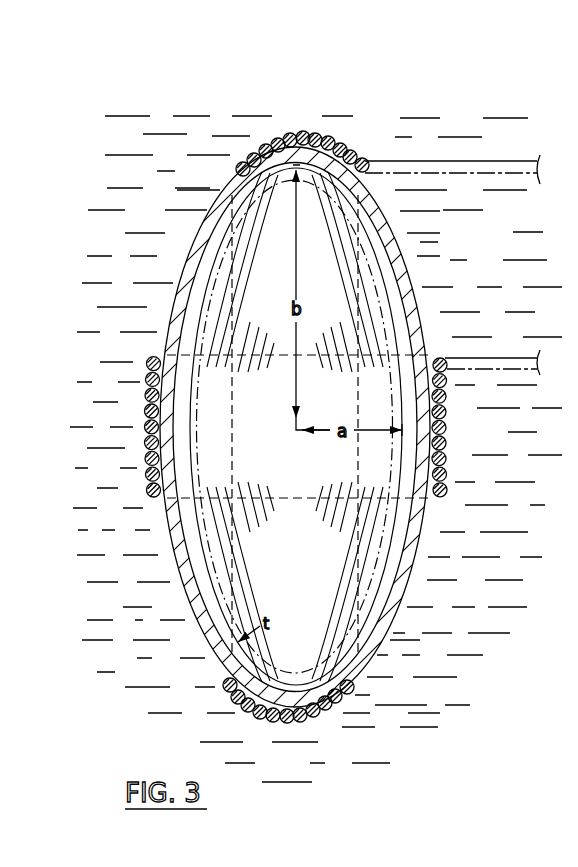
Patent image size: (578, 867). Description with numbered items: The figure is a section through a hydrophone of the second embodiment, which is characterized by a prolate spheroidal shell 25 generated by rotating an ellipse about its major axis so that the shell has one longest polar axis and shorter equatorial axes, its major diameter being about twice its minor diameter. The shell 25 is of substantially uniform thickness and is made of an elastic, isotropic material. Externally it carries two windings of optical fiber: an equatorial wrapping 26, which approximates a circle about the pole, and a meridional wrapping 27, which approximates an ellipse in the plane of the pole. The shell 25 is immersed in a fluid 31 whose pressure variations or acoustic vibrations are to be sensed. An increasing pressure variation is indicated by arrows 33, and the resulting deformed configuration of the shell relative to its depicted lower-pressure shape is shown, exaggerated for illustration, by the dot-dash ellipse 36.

The prolate spheroidal shell 25 is at (160, 517).
The equatorial wrapping 26 is at (143, 455).
The meridional wrapping 27 is at (318, 137).
The fluid 31 is at (504, 735).
The arrows 33 is at (293, 165).
The ellipse 36 is at (350, 632).